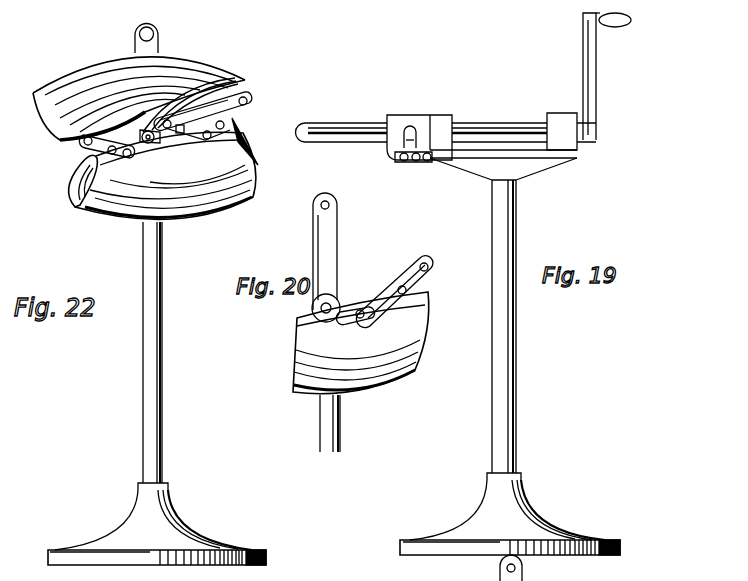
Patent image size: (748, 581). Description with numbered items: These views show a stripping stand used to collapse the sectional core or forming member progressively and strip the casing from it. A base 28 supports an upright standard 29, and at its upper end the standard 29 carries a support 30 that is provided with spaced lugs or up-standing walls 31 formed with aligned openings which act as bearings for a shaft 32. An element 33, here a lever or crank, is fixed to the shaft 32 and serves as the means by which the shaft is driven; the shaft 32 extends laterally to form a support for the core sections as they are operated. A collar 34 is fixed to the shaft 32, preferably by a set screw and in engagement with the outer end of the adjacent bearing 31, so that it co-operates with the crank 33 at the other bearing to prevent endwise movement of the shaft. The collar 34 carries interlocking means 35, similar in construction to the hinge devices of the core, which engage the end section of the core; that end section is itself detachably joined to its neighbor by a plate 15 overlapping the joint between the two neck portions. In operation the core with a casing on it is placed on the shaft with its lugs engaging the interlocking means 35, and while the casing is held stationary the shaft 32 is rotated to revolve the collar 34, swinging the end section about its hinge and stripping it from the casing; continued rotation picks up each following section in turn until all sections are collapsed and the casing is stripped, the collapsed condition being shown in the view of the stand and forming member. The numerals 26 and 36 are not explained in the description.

In FIG. 20, the plate 15 is at (423, 284).
In FIG. 20, the casing section 26 is at (422, 327).
In FIG. 22, the base 28 is at (180, 533).
In FIG. 19, the base 28 is at (535, 516).
In FIG. 22, the standard 29 is at (163, 405).
In FIG. 20, the standard 29 is at (320, 430).
In FIG. 19, the standard 29 is at (518, 442).
In FIG. 19, the support 30 is at (474, 172).
In FIG. 19, the lugs or up-standing walls 31 is at (440, 124).
In FIG. 19, the shaft 32 is at (497, 126).
In FIG. 20, the lever or crank 33 is at (331, 267).
In FIG. 19, the lever or crank 33 is at (597, 105).
In FIG. 20, the collar 34 is at (335, 304).
In FIG. 19, the collar 34 is at (406, 126).
In FIG. 20, the interlocking means 35 is at (366, 325).
In FIG. 19, the nut 36 is at (409, 162).